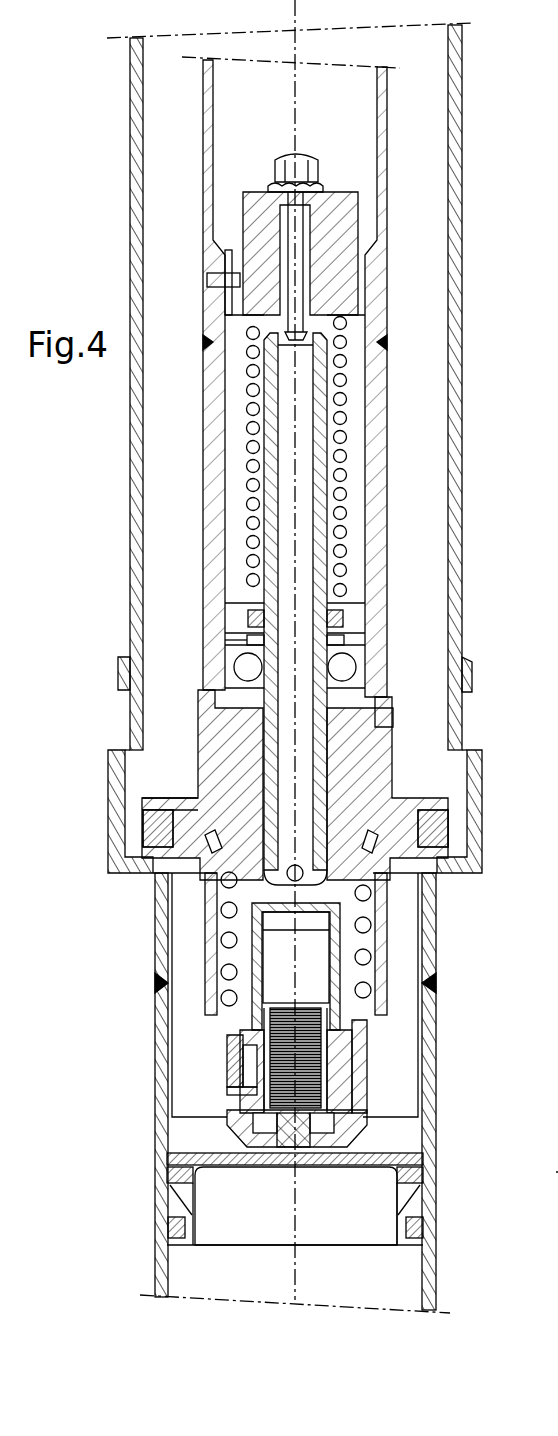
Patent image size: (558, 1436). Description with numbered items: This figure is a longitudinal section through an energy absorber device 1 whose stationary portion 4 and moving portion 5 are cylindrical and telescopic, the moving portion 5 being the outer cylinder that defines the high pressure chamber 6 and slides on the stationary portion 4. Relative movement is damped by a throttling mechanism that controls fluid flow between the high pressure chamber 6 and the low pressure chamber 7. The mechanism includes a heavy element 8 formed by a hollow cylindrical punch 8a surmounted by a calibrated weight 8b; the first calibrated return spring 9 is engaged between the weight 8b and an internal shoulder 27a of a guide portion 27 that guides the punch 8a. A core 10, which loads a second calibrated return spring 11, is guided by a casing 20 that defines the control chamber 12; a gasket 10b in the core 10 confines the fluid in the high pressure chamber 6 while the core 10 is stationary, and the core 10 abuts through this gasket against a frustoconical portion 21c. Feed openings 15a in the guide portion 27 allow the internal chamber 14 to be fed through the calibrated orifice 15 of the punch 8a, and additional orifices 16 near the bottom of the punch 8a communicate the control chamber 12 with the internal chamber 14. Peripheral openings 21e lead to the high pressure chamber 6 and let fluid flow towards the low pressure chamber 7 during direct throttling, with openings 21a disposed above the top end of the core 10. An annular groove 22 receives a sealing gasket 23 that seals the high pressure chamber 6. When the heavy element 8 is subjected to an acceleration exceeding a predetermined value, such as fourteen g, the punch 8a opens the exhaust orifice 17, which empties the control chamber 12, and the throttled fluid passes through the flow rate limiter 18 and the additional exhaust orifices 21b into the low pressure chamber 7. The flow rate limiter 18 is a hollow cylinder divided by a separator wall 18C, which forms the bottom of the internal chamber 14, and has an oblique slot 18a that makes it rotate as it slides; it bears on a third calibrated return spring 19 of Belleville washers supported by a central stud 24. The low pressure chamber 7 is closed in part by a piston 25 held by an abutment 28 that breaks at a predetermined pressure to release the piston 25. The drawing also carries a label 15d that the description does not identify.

The energy absorber device 1 is at (549, 1174).
The stationary portion 4 is at (436, 1218).
The moving portion 5 is at (462, 87).
The high pressure chamber 6 is at (442, 236).
The low pressure chamber 7 is at (405, 1047).
The heavy element 8 is at (341, 176).
The punch 8a is at (310, 358).
The calibrated weight 8b is at (358, 205).
The first calibrated return spring 9 is at (348, 330).
The core 10 is at (212, 740).
The gasket 10b is at (145, 835).
The second calibrated return spring 11 is at (398, 918).
The control chamber 12 is at (212, 960).
The internal chamber 14 is at (308, 964).
The calibrated orifice 15 is at (313, 643).
The feed openings 15a is at (207, 640).
The liner 15d is at (227, 1097).
The additional orifices 16 is at (222, 912).
The exhaust orifice 17 is at (228, 977).
The flow rate limiter 18 is at (356, 1108).
The oblique slot 18a is at (225, 1063).
The separator wall 18C is at (340, 1040).
The third calibrated return spring 19 is at (348, 1078).
The casing 20 is at (395, 722).
The openings 21a is at (215, 703).
The additional exhaust orifices 21b is at (227, 1025).
The frustoconical portion 21c is at (392, 808).
The peripheral openings 21e is at (200, 783).
The annular groove 22 is at (405, 850).
The sealing gasket 23 is at (450, 822).
The central stud 24 is at (338, 1125).
The piston 25 is at (230, 1168).
The guide portion 27 is at (372, 668).
The internal shoulder 27a is at (348, 608).
The abutment 28 is at (183, 1178).